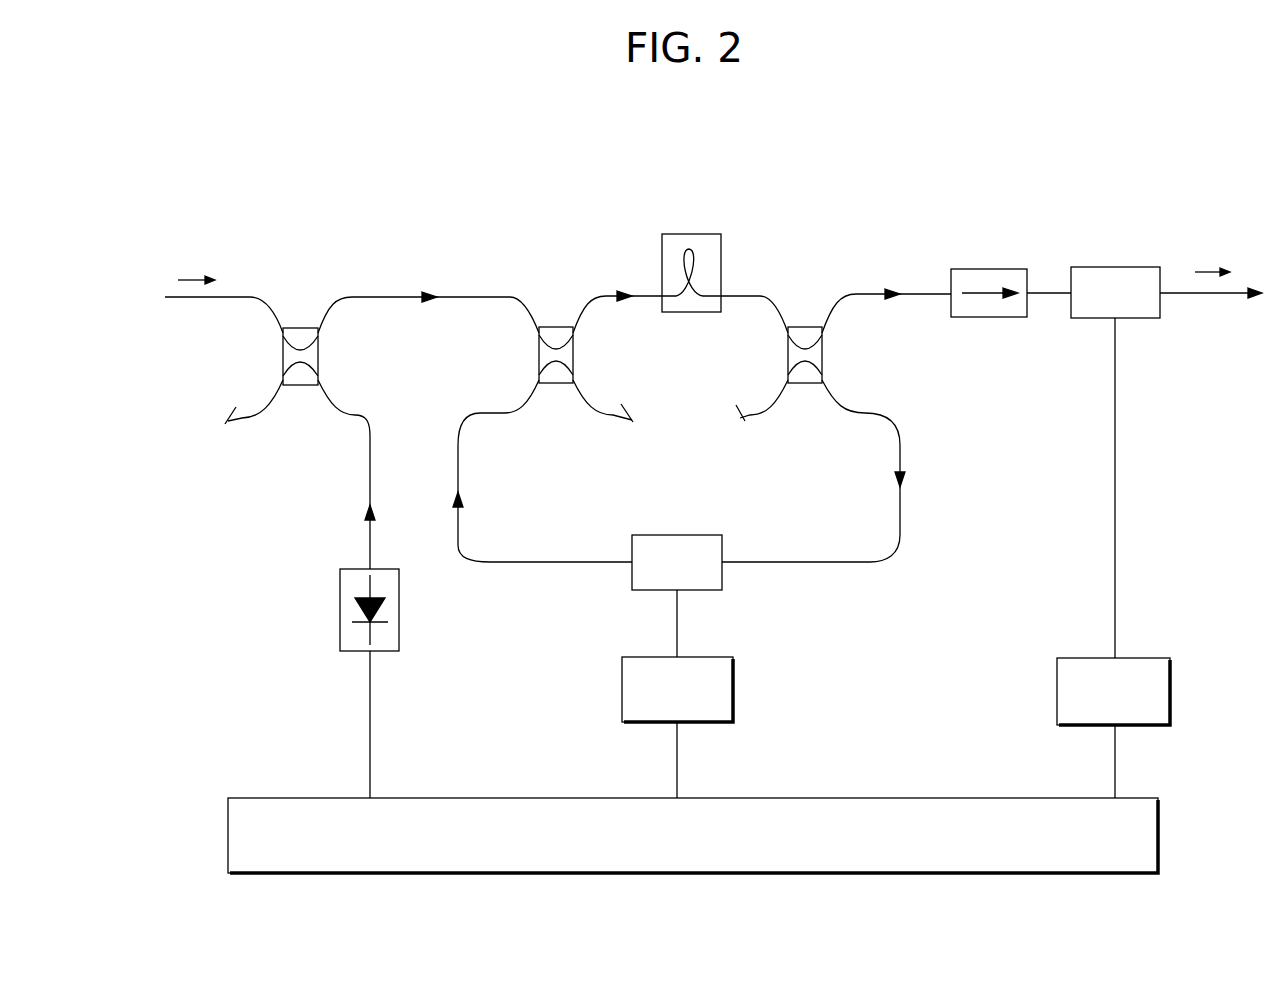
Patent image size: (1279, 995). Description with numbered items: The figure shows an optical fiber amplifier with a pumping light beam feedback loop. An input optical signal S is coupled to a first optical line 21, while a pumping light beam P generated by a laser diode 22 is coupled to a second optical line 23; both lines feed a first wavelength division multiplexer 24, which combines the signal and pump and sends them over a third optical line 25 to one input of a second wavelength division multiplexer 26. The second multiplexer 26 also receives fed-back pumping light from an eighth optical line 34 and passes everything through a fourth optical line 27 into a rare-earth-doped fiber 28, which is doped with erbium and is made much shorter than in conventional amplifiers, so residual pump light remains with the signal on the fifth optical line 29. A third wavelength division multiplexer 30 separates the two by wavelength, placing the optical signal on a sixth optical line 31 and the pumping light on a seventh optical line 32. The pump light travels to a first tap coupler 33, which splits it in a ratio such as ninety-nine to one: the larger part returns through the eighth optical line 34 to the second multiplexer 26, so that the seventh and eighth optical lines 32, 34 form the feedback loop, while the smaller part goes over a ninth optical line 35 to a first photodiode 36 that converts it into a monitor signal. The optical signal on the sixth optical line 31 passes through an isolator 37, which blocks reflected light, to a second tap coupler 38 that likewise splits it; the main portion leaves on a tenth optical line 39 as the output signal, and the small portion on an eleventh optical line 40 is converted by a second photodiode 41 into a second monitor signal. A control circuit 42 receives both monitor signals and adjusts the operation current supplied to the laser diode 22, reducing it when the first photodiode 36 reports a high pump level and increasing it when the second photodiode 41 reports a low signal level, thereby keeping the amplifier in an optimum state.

The first optical line 21 is at (210, 300).
The laser diode 22 is at (340, 612).
The second optical line 23 is at (368, 461).
The first wavelength division multiplexer 24 is at (300, 328).
The third optical line 25 is at (476, 295).
The second wavelength division multiplexer 26 is at (553, 327).
The fourth optical line 27 is at (644, 300).
The rare-earth-doped fiber 28 is at (689, 234).
The fifth optical line 29 is at (745, 294).
The third wavelength division multiplexer 30 is at (805, 327).
The sixth optical line 31 is at (922, 297).
The seventh optical line 32 is at (872, 563).
The first tap coupler 33 is at (672, 535).
The eighth optical line 34 is at (569, 562).
The ninth optical line 35 is at (675, 615).
The first photodiode 36 is at (622, 693).
The isolator 37 is at (988, 269).
The second tap coupler 38 is at (1120, 267).
The tenth optical line 39 is at (1200, 296).
The eleventh optical line 40 is at (1113, 470).
The second photodiode 41 is at (1057, 690).
The control circuit 42 is at (850, 797).